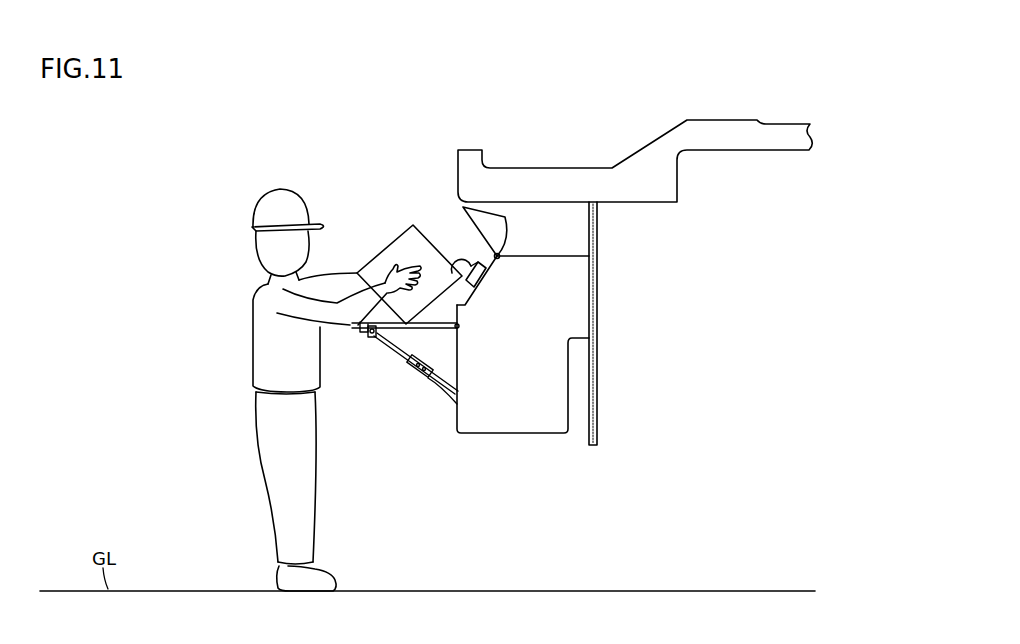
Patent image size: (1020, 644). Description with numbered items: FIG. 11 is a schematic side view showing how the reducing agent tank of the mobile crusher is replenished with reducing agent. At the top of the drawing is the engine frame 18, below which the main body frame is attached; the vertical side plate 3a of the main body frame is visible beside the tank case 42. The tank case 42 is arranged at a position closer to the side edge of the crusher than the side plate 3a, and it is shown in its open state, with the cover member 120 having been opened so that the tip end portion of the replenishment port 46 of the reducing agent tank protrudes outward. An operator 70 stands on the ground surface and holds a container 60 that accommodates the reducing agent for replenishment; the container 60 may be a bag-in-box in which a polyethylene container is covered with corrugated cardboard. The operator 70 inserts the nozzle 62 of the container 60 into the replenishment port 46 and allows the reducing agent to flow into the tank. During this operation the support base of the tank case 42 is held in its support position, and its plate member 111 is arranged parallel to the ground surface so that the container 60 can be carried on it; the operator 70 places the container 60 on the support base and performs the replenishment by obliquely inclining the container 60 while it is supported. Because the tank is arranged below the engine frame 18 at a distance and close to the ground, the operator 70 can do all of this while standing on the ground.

The engine frame 18 is at (702, 137).
The cover member 120 is at (494, 225).
The nozzle 62 is at (456, 261).
The replenishment port 46 is at (480, 268).
The container 60 is at (403, 247).
The plate member 111 is at (400, 333).
The tank case 42 is at (512, 418).
The side plate 3a is at (598, 324).
The operator 70 is at (272, 346).